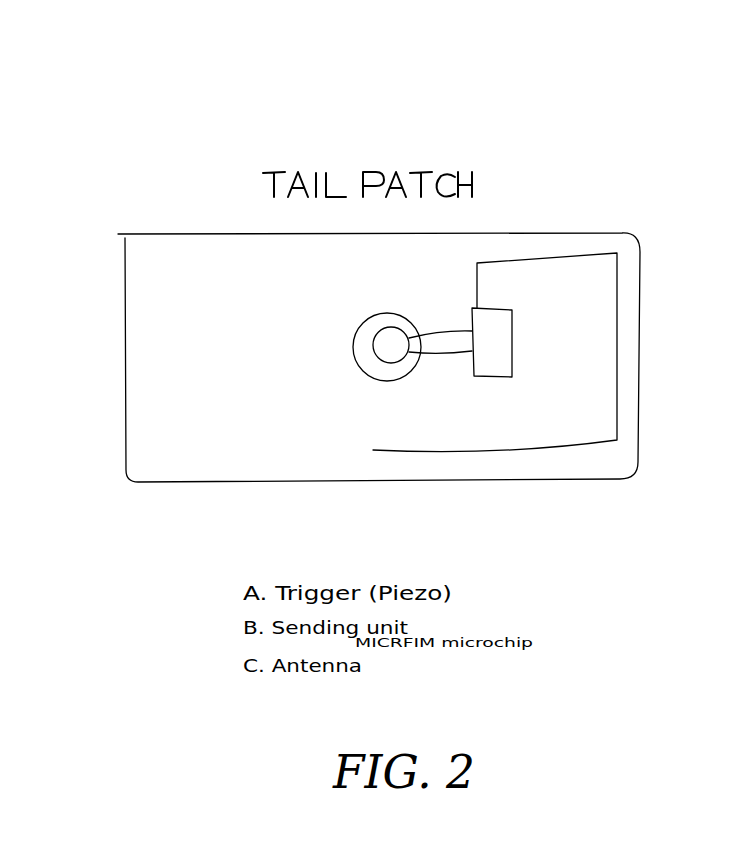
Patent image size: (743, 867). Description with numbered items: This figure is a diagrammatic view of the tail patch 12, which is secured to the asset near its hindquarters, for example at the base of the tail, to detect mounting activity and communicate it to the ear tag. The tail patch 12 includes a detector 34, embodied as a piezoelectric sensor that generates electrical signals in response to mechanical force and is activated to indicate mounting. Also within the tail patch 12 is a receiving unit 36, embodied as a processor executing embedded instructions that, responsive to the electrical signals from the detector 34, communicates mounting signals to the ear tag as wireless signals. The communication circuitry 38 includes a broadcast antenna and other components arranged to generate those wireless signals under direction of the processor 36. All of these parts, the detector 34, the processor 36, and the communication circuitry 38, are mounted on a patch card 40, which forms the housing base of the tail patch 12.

The tail patch 12 is at (379, 272).
The detector 34 is at (345, 338).
The receiving unit 36 is at (462, 381).
The communication circuitry 38 is at (590, 253).
The patch card 40 is at (143, 268).